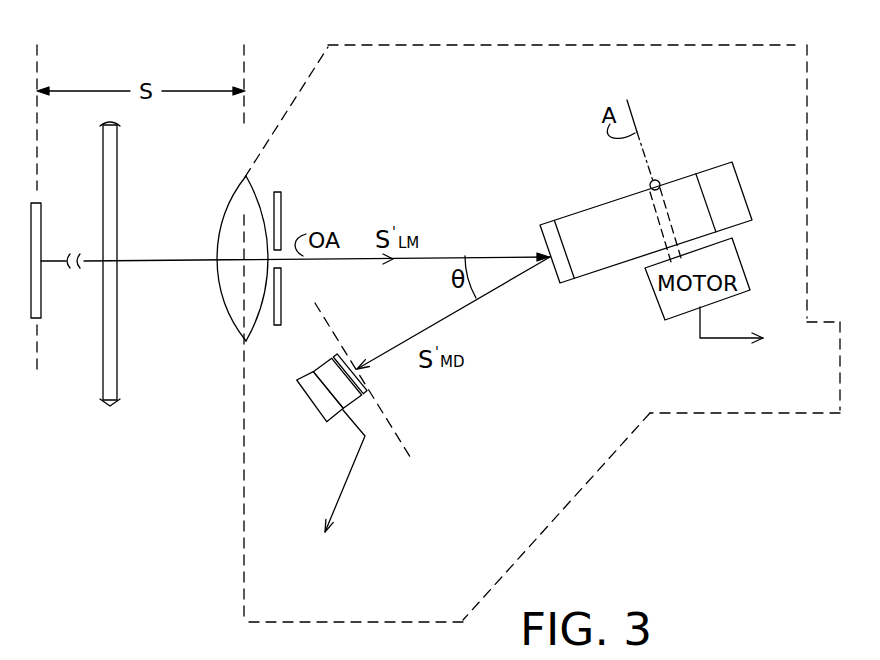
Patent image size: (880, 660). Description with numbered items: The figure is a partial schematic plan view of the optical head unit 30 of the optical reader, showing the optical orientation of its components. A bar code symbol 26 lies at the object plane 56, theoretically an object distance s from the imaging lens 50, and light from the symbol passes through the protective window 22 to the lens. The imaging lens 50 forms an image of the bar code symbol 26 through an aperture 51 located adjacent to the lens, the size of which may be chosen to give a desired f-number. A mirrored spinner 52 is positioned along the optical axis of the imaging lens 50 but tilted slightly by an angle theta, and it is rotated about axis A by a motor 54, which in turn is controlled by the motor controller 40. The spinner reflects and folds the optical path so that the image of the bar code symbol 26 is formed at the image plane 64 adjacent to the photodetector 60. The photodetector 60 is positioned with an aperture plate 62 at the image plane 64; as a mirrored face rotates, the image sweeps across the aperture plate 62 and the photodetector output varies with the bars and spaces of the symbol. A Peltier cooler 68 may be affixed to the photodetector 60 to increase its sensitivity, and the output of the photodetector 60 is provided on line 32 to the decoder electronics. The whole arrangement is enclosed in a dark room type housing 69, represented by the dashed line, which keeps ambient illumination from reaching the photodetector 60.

The protective window 22 is at (102, 157).
The bar code symbol 26 is at (41, 232).
The optical head unit 30 is at (458, 148).
The line 32 is at (340, 483).
The motor controller 40 is at (747, 353).
The imaging lens 50 is at (251, 184).
The aperture 51 is at (290, 240).
The mirrored spinner 52 is at (748, 162).
The motor 54 is at (741, 262).
The object plane 56 is at (36, 347).
The photodetector 60 is at (325, 366).
The aperture plate 62 is at (336, 354).
The image plane 64 is at (388, 420).
The Peltier cooler 68 is at (308, 399).
The dark room type housing 69 is at (296, 97).